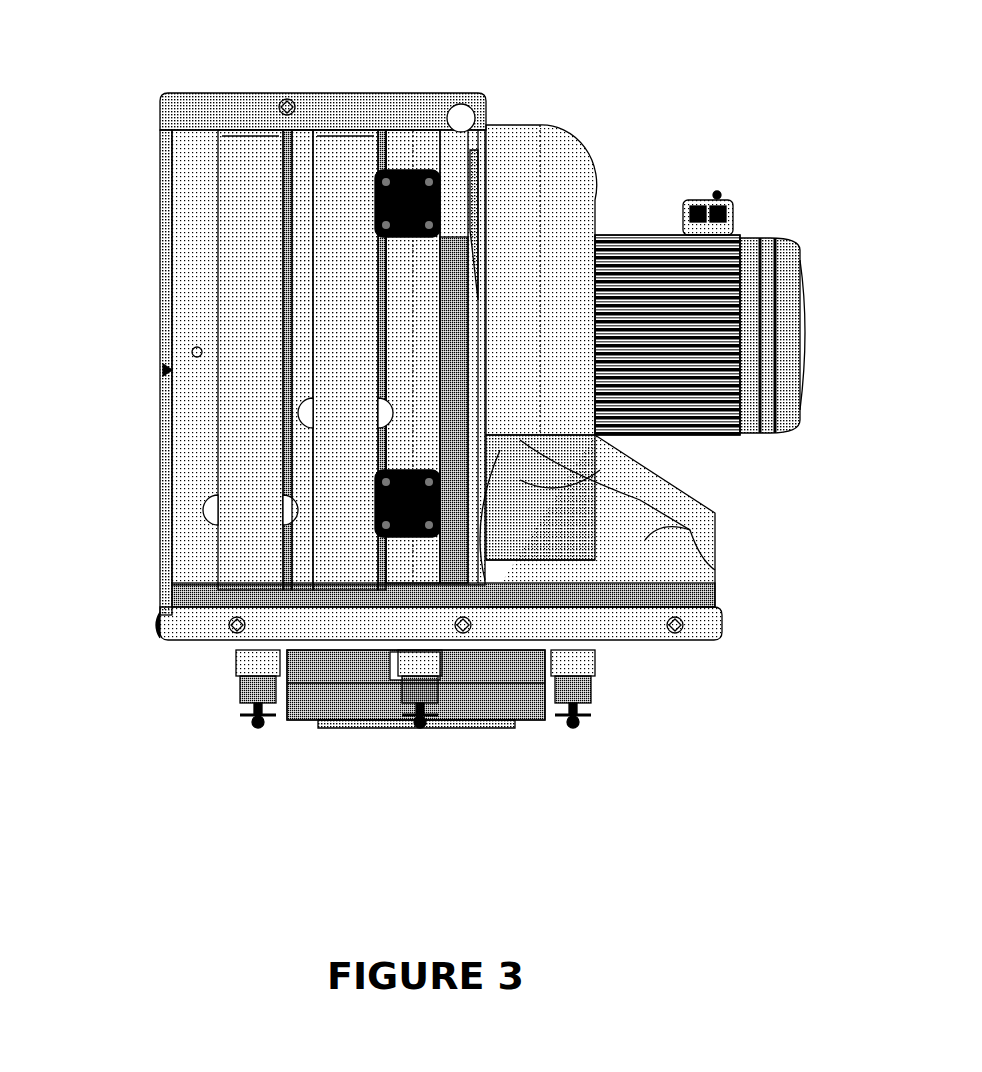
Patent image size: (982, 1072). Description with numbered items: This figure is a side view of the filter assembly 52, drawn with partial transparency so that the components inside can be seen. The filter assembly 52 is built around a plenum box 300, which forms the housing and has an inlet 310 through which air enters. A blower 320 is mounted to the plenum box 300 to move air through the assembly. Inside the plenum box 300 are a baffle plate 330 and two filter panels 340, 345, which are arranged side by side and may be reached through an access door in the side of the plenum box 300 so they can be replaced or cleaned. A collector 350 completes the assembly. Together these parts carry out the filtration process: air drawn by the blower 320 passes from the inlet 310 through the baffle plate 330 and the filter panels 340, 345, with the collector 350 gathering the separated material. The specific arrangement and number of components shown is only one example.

The filter assembly 52 is at (800, 39).
The plenum box 300 is at (163, 163).
The inlet 310 is at (487, 710).
The blower 320 is at (580, 190).
The baffle plate 330 is at (703, 597).
The filter panel 340 is at (248, 172).
The filter panel 345 is at (343, 158).
The collector 350 is at (193, 633).